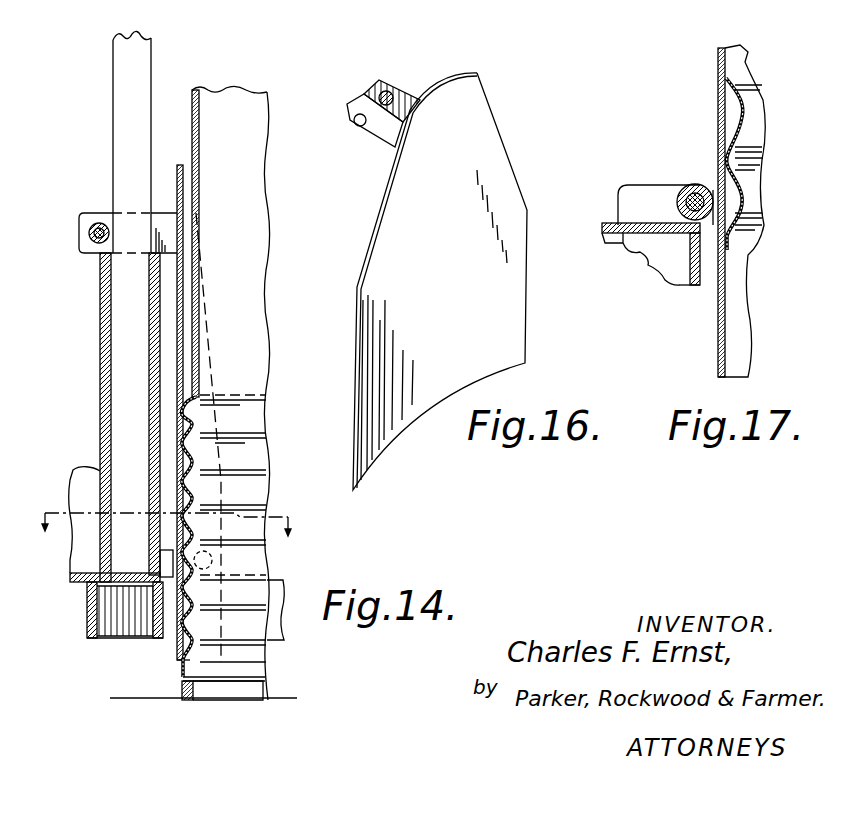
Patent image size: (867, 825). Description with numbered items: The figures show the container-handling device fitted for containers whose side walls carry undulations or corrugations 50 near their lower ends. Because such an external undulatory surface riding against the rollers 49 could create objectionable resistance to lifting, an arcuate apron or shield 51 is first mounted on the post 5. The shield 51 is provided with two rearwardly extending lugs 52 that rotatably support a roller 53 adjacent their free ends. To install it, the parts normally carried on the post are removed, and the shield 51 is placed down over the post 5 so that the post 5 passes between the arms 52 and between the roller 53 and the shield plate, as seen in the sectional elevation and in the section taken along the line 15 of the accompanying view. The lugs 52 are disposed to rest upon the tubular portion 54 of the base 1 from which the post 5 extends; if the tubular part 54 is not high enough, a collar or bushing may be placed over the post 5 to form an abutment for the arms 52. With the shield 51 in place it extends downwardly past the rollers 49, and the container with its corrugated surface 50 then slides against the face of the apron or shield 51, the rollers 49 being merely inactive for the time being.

In FIG. 14, the base member 1 is at (88, 613).
In FIG. 17, the base member 1 is at (650, 253).
In FIG. 14, the post 5 is at (140, 58).
In FIG. 14, the section line 15- 15 is at (180, 537).
In FIG. 14, the rollers 49 is at (215, 566).
In FIG. 17, the rollers 49 is at (690, 183).
In FIG. 14, the undulations or corrugations 50 is at (187, 487).
In FIG. 17, the undulations or corrugations 50 is at (730, 173).
In FIG. 14, the arcuate apron or shield 51 is at (178, 317).
In FIG. 16, the arcuate apron or shield 51 is at (440, 281).
In FIG. 17, the arcuate apron or shield 51 is at (716, 320).
In FIG. 14, the rearwardly extending lugs 52 is at (88, 213).
In FIG. 16, the rearwardly extending lugs 52 is at (378, 92).
In FIG. 14, the roller 53 is at (88, 251).
In FIG. 16, the roller 53 is at (386, 106).
In FIG. 14, the tubular portion 54 is at (100, 328).